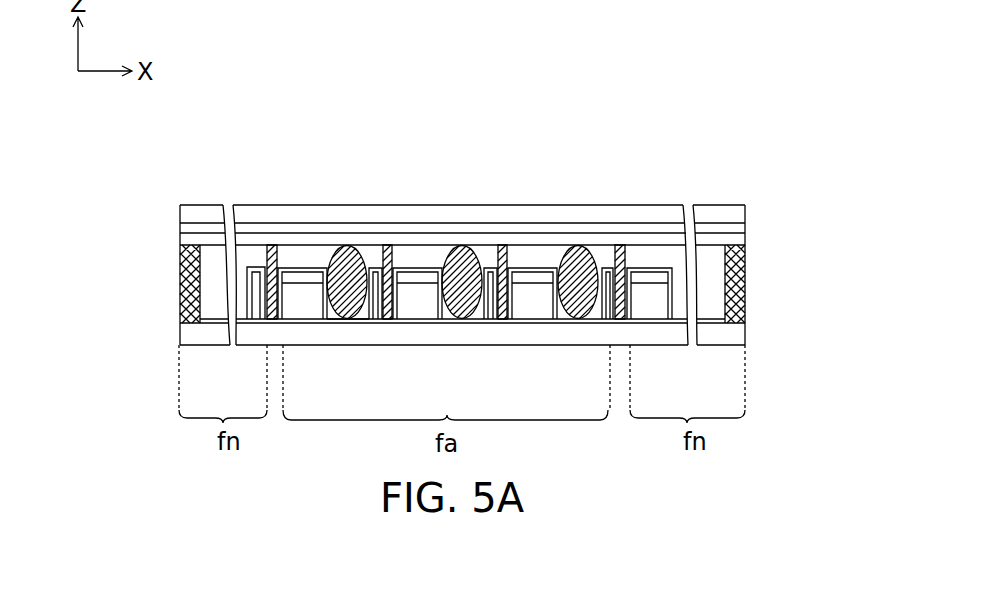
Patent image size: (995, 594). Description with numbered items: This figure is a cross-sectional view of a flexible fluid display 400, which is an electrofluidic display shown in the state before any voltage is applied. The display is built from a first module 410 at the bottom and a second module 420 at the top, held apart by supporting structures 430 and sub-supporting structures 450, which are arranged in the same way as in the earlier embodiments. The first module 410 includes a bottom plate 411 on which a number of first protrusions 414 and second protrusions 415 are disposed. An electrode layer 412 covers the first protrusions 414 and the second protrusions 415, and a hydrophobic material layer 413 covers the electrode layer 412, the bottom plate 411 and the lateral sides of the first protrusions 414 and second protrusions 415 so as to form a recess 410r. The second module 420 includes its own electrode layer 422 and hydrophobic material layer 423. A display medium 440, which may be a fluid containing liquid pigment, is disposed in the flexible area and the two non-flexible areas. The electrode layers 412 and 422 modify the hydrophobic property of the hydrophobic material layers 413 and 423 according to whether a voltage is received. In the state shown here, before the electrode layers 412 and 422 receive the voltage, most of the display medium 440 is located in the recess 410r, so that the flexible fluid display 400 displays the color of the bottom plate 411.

The flexible fluid display 400 is at (853, 45).
The second module 420 is at (163, 223).
The electrode layer 422 is at (735, 231).
The hydrophobic material layer 423 is at (737, 238).
The first module 410 is at (163, 338).
The bottom plate 411 is at (740, 333).
The electrode layer 412 is at (302, 282).
The hydrophobic material layer 413 is at (318, 272).
The first protrusions 414 is at (292, 297).
The second protrusions 415 is at (373, 245).
The supporting structures 430 is at (271, 248).
The display medium 440 is at (346, 258).
The sub-supporting structures 450 is at (390, 252).
The recess 410r is at (329, 328).